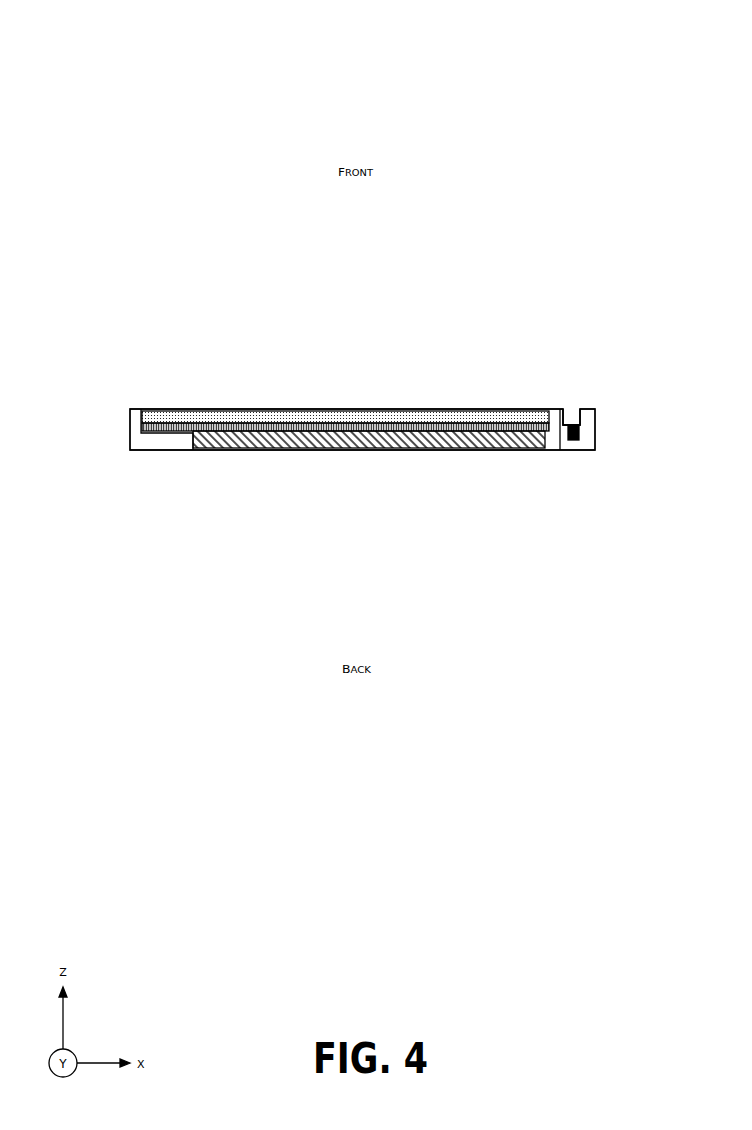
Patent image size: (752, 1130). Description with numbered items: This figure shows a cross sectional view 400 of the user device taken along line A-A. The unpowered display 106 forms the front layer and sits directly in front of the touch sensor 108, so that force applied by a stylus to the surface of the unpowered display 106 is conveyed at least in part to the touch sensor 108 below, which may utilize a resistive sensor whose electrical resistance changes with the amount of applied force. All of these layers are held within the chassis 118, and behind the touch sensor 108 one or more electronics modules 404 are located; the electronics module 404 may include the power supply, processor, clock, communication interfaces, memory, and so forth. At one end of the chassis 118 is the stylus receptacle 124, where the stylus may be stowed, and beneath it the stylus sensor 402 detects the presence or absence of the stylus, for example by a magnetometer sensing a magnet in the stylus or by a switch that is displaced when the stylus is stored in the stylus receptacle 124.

The cross sectional view 400 is at (582, 73).
The unpowered display 106 is at (233, 413).
The touch sensor 108 is at (182, 427).
The chassis 118 is at (582, 450).
The stylus receptacle 124 is at (572, 407).
The stylus sensor 402 is at (568, 442).
The electronics module 404 is at (408, 442).